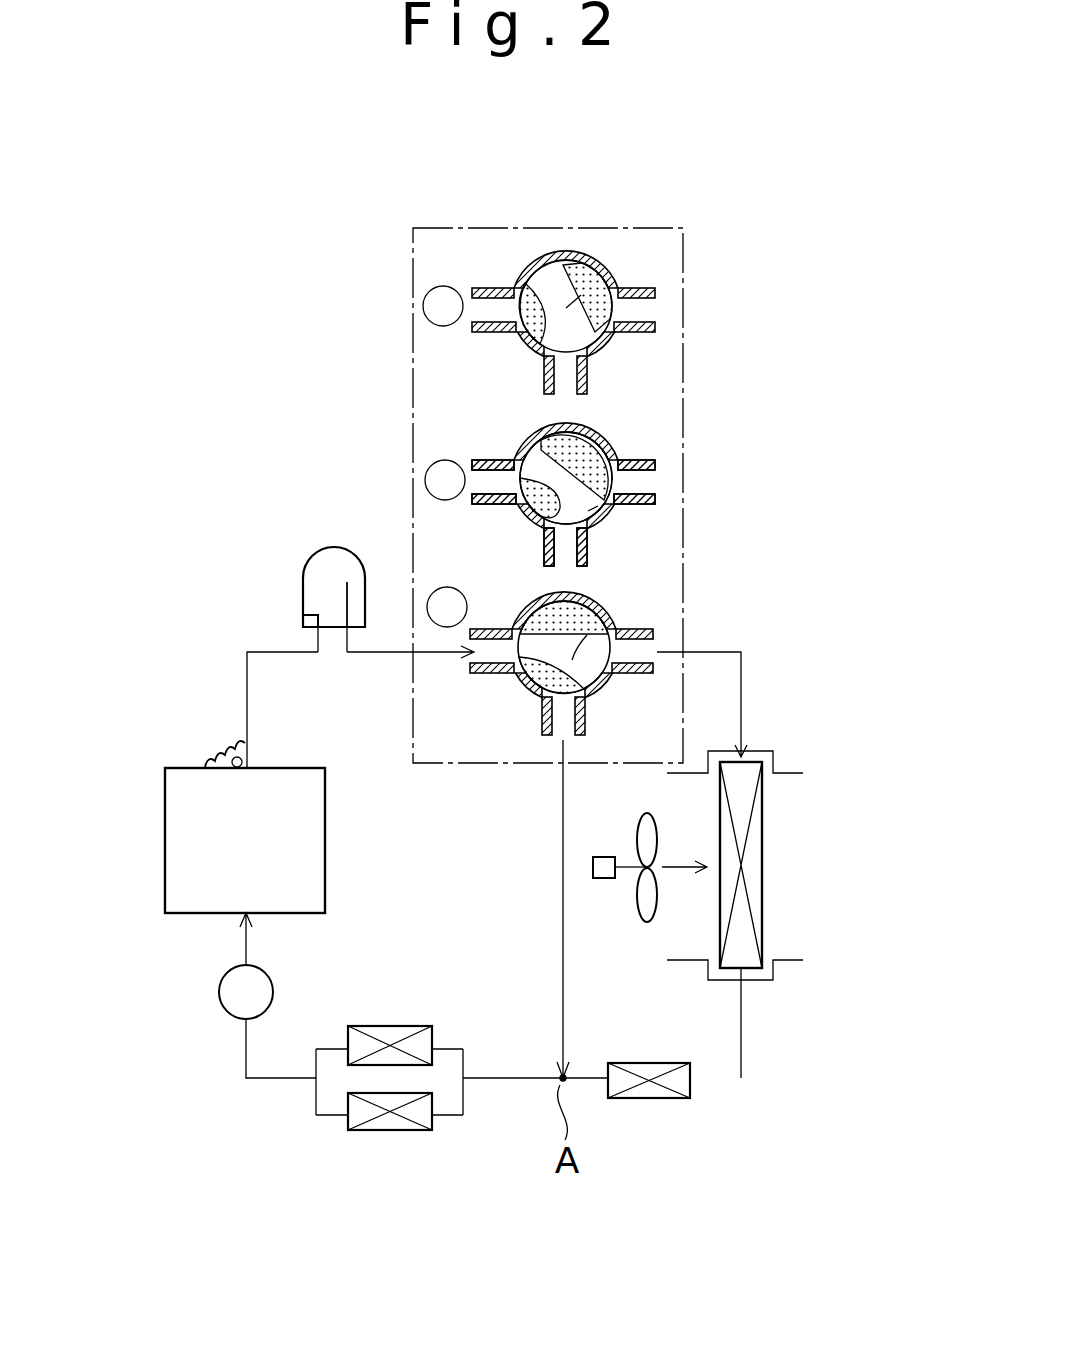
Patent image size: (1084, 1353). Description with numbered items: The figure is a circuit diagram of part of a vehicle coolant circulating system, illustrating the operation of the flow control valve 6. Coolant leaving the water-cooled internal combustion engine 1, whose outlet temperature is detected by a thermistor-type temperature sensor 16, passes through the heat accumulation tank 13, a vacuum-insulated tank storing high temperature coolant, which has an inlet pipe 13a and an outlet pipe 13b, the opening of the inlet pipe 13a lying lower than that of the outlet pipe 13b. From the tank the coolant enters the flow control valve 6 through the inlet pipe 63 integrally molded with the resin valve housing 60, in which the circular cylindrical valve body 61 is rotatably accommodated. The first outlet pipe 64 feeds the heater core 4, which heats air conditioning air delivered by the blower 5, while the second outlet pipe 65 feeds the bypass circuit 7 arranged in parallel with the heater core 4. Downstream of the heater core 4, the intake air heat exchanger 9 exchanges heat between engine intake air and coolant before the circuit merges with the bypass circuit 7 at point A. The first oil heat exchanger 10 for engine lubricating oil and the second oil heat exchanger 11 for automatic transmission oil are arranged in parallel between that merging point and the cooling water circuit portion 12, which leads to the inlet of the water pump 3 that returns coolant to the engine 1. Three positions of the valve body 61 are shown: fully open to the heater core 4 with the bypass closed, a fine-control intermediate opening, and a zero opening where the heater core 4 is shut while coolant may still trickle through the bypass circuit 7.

The internal combustion engine 1 is at (165, 840).
The water pump 3 is at (222, 980).
The heater core 4 is at (762, 918).
The blower 5 is at (647, 905).
The flow control valve 6 is at (683, 437).
The bypass circuit 7 is at (562, 835).
The intake air heat exchanger 9 is at (650, 1098).
The first oil heat exchanger 10 is at (400, 1026).
The second oil heat exchanger 11 is at (390, 1130).
The cooling water circuit portion 12 is at (275, 1080).
The heat accumulation tank 13 is at (303, 565).
The inlet pipe 13a is at (303, 617).
The outlet pipe 13b is at (347, 582).
The temperature sensor 16 is at (215, 762).
The valve housing 60 is at (635, 439).
The valve body 61 is at (659, 395).
The inlet pipe 63 is at (427, 436).
The first outlet pipe 64 is at (706, 431).
The second outlet pipe 65 is at (469, 498).